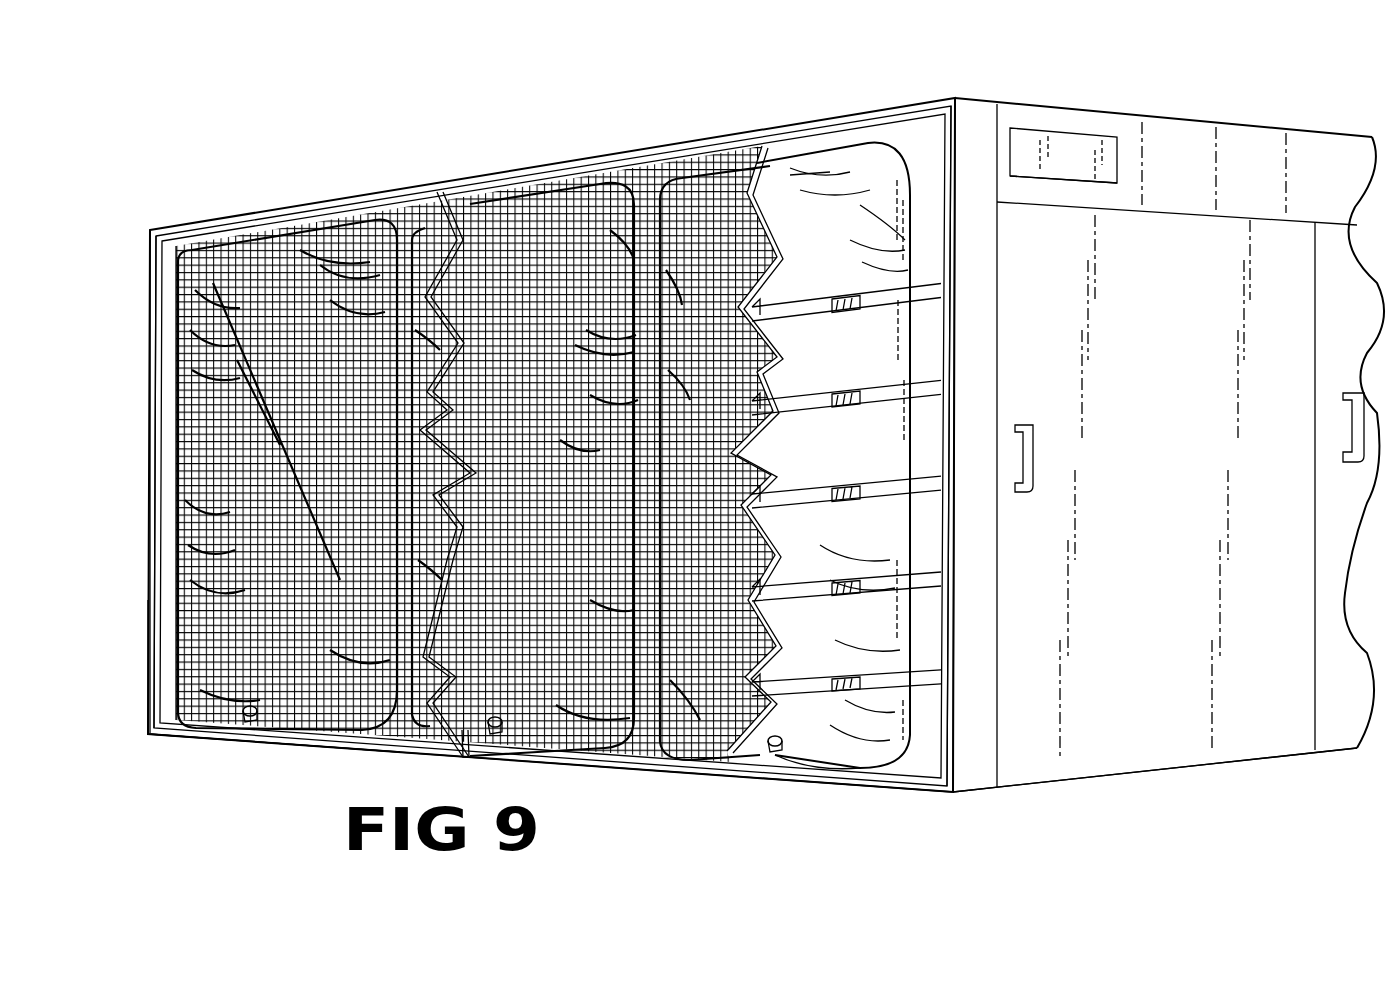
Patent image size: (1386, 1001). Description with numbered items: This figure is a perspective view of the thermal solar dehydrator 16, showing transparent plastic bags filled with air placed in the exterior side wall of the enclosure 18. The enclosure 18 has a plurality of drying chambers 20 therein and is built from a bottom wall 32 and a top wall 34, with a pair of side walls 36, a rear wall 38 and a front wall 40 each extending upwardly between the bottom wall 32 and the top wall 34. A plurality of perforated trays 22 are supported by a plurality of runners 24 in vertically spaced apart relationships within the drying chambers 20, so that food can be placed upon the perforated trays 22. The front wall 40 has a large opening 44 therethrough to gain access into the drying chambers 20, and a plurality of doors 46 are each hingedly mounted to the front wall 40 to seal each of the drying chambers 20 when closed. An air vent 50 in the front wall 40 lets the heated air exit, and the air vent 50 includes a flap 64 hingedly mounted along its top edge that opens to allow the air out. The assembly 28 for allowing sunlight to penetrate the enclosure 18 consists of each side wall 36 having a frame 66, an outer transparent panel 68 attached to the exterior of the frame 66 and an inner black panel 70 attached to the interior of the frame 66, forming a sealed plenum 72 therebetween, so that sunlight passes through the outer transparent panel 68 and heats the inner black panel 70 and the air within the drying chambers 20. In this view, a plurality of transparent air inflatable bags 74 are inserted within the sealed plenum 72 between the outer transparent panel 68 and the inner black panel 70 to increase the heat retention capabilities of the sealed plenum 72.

The thermal solar dehydrator 16 is at (497, 155).
The enclosure 18 is at (1199, 122).
The drying chambers 20 is at (834, 276).
The perforated trays 22 is at (878, 407).
The runners 24 is at (780, 506).
The assembly for allowing sunlight to penetrate 28 is at (273, 264).
The bottom wall 32 is at (980, 786).
The top wall 34 is at (973, 98).
The side walls 36 is at (150, 590).
The rear wall 38 is at (150, 338).
The front wall 40 is at (1272, 138).
The large opening 44 is at (995, 757).
The doors 46 is at (1147, 745).
The air vent 50 is at (1063, 175).
The flap 64 is at (1068, 143).
The frame 66 is at (718, 152).
The outer transparent panel 68 is at (398, 213).
The inner black panel 70 is at (652, 183).
The sealed plenum 72 is at (473, 740).
The transparent air inflatable bags 74 is at (819, 745).